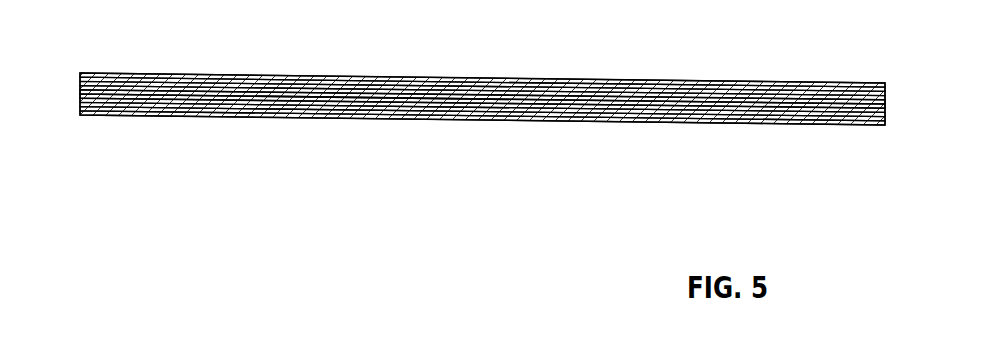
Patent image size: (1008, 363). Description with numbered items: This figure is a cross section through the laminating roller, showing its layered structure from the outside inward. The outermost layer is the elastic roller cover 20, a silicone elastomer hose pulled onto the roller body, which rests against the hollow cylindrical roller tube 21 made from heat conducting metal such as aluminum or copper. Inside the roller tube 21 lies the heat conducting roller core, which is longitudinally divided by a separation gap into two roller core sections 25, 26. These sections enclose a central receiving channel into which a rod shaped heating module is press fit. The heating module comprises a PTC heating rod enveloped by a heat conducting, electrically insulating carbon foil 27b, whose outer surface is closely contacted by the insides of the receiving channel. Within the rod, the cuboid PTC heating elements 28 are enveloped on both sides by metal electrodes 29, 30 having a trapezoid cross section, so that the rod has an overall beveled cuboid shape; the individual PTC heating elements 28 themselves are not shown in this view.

The roller cover 20 is at (105, 76).
The roller tube 21 is at (173, 82).
The roller core section 25 is at (260, 85).
The roller core section 26 is at (265, 107).
The heat conducting electrically insulating foil 27b is at (340, 90).
The PTC heating elements 28 is at (80, 93).
The metal electrode 29 is at (432, 97).
The metal electrode 30 is at (436, 106).